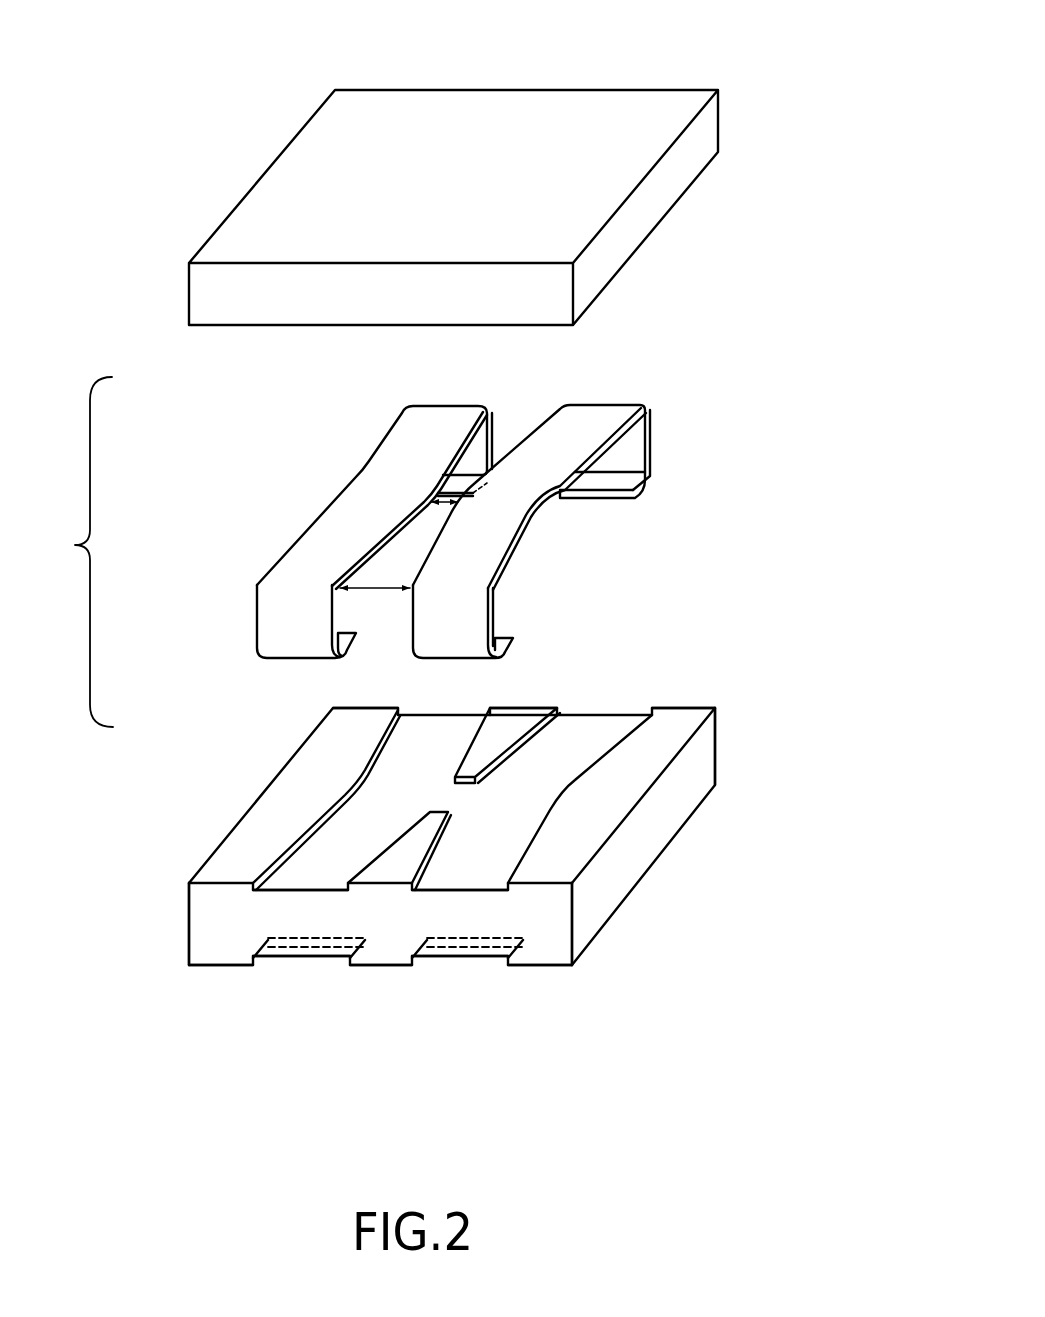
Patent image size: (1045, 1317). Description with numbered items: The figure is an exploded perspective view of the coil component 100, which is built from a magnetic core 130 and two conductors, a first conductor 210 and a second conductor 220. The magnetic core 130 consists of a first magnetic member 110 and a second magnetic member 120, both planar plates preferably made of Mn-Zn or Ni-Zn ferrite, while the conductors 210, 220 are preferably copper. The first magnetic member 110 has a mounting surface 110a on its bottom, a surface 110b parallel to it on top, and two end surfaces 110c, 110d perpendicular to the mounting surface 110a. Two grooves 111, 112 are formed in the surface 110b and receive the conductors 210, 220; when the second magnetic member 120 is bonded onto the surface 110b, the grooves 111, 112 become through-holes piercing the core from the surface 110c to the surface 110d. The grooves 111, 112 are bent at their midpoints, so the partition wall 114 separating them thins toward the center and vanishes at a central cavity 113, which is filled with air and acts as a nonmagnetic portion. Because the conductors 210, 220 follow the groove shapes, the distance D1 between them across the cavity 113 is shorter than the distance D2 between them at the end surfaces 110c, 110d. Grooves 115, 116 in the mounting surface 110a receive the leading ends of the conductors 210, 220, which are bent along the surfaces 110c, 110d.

The coil component 100 is at (823, 38).
The first magnetic member 110 is at (268, 806).
The mounting surface 110a is at (548, 942).
The surface parallel to the mounting surface 110b is at (677, 715).
The surface perpendicular to the mounting surface 110c is at (208, 925).
The surface perpendicular to the mounting surface 110d is at (690, 762).
The first groove 111 is at (318, 865).
The second groove 112 is at (465, 865).
The cavity 113 is at (428, 787).
The partition wall 114 is at (513, 717).
The groove 115 is at (313, 966).
The groove 116 is at (468, 966).
The second magnetic member 120 is at (243, 313).
The magnetic core 130 is at (64, 552).
The first conductor 210 is at (355, 503).
The second conductor 220 is at (513, 527).
The distance between the conductors through the cavity D1 is at (438, 493).
The distance between the conductors in the end surfaces D2 is at (375, 608).